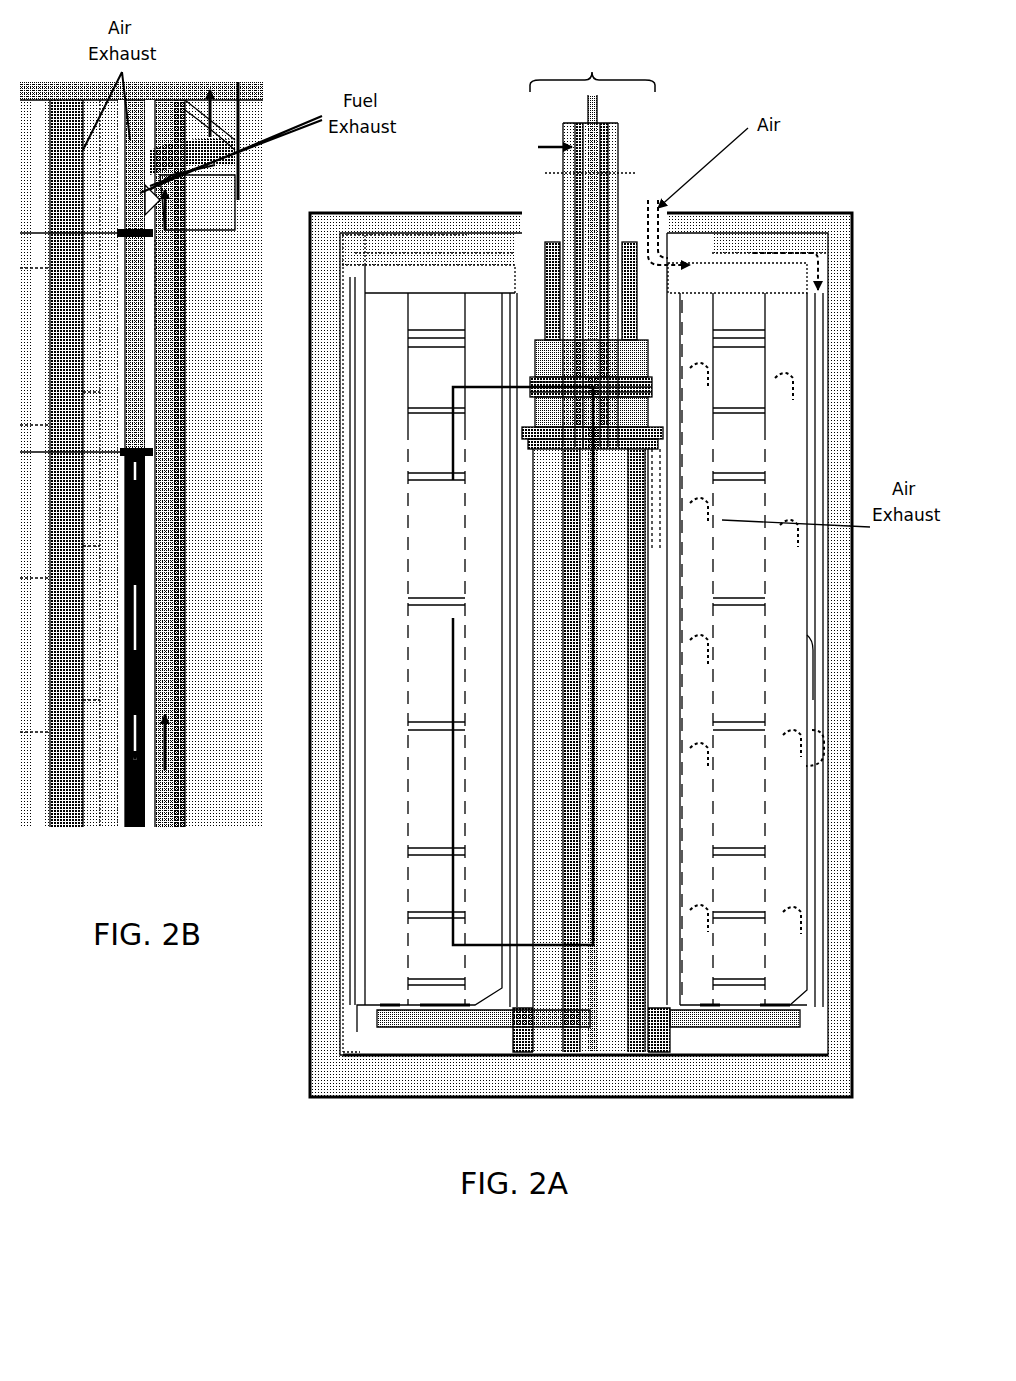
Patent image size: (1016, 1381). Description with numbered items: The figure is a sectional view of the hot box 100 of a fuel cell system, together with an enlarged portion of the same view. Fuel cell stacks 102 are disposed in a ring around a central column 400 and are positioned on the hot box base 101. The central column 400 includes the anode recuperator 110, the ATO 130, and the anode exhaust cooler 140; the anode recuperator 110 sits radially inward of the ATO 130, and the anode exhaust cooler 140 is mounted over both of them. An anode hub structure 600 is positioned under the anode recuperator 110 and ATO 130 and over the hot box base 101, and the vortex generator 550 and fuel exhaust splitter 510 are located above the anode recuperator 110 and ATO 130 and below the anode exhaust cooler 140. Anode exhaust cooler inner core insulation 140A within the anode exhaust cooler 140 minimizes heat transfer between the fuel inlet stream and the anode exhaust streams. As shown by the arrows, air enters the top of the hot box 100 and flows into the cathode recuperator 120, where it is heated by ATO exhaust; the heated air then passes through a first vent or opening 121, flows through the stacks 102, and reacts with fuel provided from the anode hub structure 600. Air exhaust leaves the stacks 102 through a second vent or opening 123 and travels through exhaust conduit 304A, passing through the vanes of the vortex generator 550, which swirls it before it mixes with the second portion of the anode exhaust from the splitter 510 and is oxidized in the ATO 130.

In FIG. 2A, the hot box 100 is at (580, 1095).
In FIG. 2A, the hot box base 101 is at (463, 1053).
In FIG. 2A, the fuel cell stack 102 is at (725, 638).
In FIG. 2B, the fuel cell stack 102 is at (65, 790).
In FIG. 2A, the anode recuperator 110 is at (640, 617).
In FIG. 2B, the anode recuperator 110 is at (180, 292).
In FIG. 2A, the cathode recuperator 120 is at (815, 460).
In FIG. 2A, the first vent or opening 121 is at (813, 733).
In FIG. 2A, the second vent or opening 123 is at (268, 425).
In FIG. 2A, the anode tail gas oxidizer (ATO) 130 is at (658, 668).
In FIG. 2B, the anode tail gas oxidizer (ATO) 130 is at (145, 795).
In FIG. 2A, the anode exhaust cooler 140 is at (545, 273).
In FIG. 2A, the anode exhaust cooler inner core insulation 140A is at (567, 257).
In FIG. 2A, the exhaust conduit 304A is at (657, 360).
In FIG. 2A, the central column 400 is at (592, 78).
In FIG. 2A, the fuel exhaust splitter 510 is at (652, 448).
In FIG. 2B, the fuel exhaust splitter 510 is at (162, 190).
In FIG. 2A, the vortex generator 550 is at (663, 437).
In FIG. 2A, the anode hub structure 600 is at (720, 1030).